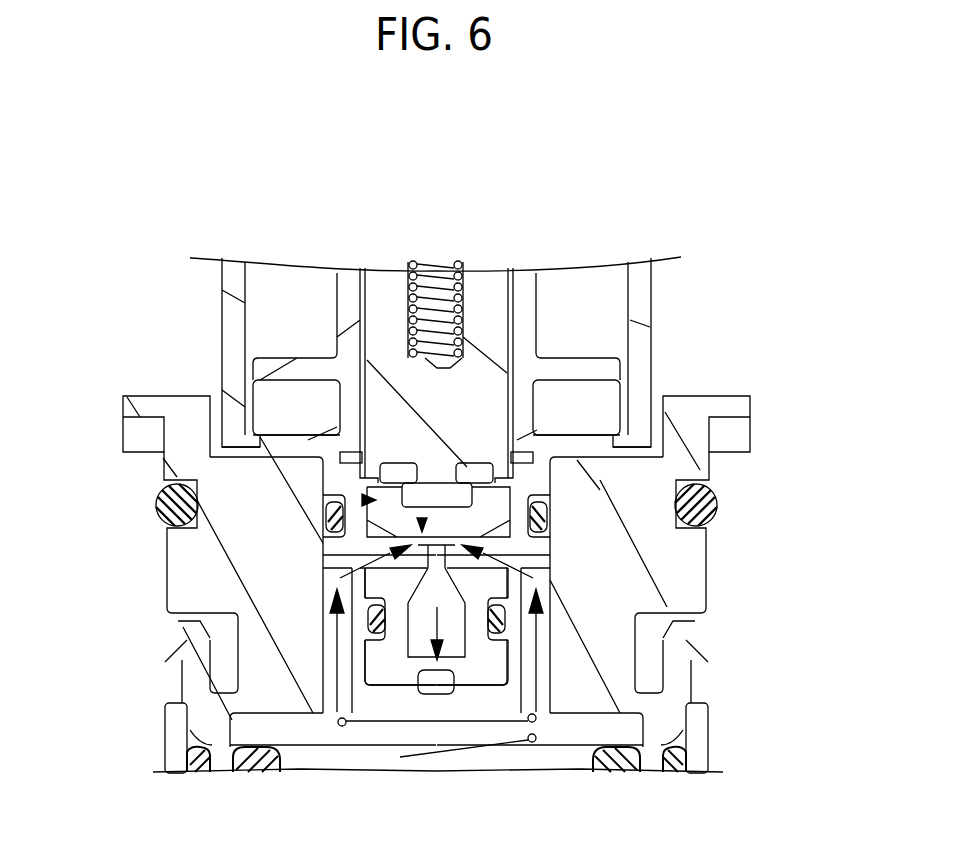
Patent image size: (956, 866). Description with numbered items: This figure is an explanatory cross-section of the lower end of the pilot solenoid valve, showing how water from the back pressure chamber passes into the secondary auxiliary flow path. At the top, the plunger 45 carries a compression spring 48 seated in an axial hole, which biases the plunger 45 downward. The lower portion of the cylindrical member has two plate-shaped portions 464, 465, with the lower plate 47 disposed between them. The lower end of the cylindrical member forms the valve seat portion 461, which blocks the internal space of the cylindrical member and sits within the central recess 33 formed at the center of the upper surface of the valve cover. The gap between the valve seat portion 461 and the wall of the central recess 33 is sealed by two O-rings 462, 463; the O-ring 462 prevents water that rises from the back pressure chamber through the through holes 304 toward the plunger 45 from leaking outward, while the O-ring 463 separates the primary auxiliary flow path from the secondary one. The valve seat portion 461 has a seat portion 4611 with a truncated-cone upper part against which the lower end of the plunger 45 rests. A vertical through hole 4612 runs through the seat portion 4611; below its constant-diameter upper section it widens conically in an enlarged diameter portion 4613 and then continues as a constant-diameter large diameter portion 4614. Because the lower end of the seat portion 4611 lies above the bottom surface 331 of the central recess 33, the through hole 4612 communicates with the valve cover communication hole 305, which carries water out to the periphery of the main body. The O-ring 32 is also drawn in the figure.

The O-ring 32 is at (720, 512).
The central recess 33 is at (370, 668).
The through hole 304 is at (325, 645).
The valve cover communication hole 305 is at (437, 685).
The bottom surface 331 is at (467, 675).
The plunger 45 is at (362, 500).
The lower plate 47 is at (590, 410).
The spring 48 is at (430, 283).
The valve seat portion 461 is at (422, 518).
The seat portion 4611 is at (445, 553).
The through hole 4612 is at (428, 556).
The enlarged diameter portion 4613 is at (427, 590).
The large diameter portion 4614 is at (455, 645).
The O-ring 462 is at (553, 520).
The O-ring 463 is at (500, 612).
The plate-shaped portion 464 is at (598, 373).
The plate-shaped portion 465 is at (598, 452).